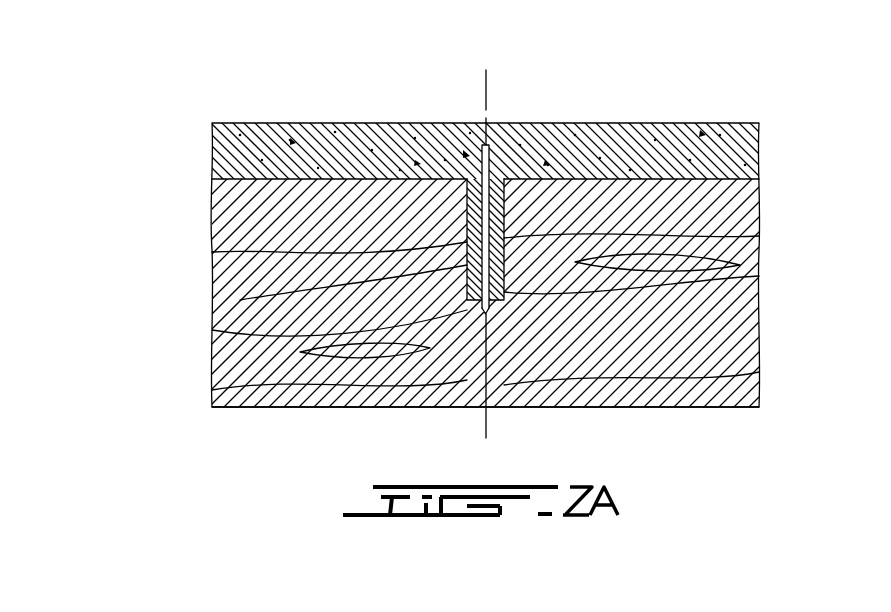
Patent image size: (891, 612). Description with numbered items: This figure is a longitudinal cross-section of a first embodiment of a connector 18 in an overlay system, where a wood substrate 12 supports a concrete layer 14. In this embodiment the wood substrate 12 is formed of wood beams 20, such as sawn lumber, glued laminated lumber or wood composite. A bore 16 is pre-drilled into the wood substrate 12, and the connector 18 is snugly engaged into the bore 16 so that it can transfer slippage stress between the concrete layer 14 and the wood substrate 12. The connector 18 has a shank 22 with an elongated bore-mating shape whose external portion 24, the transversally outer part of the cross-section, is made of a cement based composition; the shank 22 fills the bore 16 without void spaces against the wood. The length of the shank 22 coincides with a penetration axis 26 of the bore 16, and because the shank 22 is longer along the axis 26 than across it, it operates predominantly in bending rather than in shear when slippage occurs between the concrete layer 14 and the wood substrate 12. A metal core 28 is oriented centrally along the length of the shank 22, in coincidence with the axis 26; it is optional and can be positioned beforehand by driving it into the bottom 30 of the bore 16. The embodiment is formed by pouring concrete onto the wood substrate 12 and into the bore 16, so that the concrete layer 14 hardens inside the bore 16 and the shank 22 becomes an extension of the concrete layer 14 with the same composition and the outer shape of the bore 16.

The wood substrate 12 is at (766, 373).
The concrete layer 14 is at (680, 134).
The bore 16 is at (212, 273).
The connector 18 is at (758, 243).
The wood beam 20 is at (689, 390).
The shank 22 is at (504, 203).
The external portion 24 is at (507, 258).
The penetration axis 26 is at (487, 86).
The metal core 28 is at (467, 189).
The bottom 30 is at (488, 313).